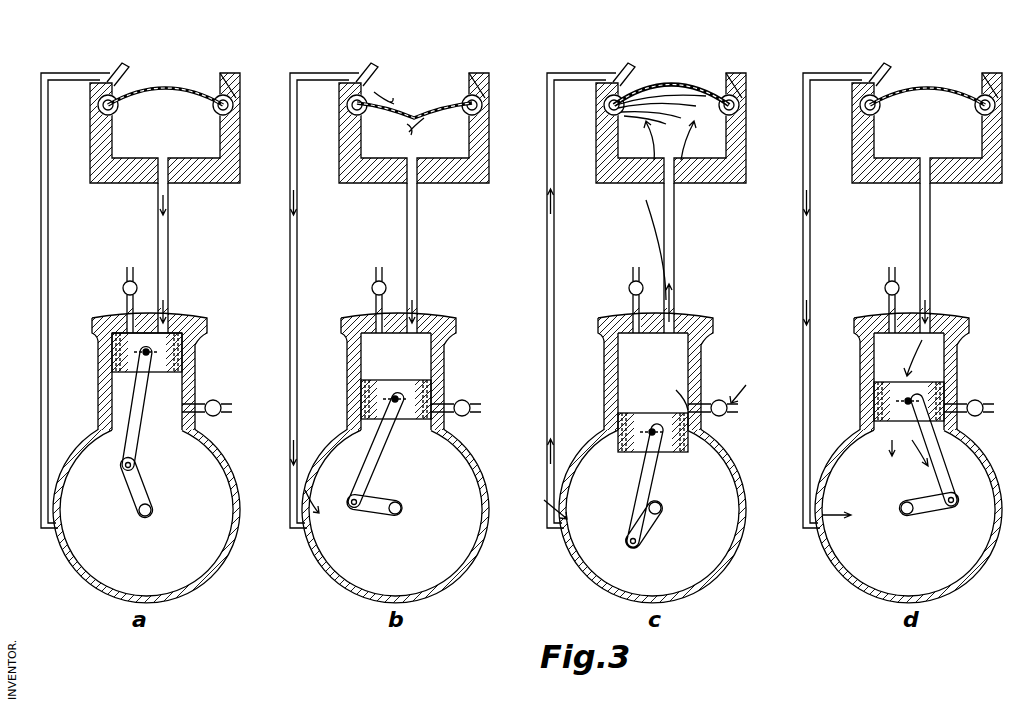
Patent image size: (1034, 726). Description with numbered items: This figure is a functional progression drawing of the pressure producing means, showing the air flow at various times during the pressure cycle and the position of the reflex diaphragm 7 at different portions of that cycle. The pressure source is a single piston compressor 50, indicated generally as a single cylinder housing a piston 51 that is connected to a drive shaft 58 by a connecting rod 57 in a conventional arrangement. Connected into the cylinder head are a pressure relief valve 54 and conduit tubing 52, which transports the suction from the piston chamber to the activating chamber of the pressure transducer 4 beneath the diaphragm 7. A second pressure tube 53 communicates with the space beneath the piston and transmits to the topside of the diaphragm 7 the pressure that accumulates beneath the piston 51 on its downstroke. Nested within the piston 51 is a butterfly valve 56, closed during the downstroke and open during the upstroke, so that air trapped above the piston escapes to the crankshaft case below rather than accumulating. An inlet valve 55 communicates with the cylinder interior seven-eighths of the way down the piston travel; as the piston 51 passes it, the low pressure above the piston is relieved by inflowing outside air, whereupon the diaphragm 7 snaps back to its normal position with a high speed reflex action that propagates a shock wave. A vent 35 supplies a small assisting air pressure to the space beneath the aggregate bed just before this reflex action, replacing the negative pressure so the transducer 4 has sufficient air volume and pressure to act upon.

The vent 35 is at (110, 78).
The reflex diaphragm 7 is at (170, 88).
The pressure transducer 4 is at (233, 155).
The second pressure tube 53 is at (50, 240).
The pressure relief valve 54 is at (121, 283).
The butterfly valve 56 is at (105, 312).
The conduit tubing 52 is at (170, 283).
The piston 51 is at (184, 360).
The inlet valve 55 is at (222, 406).
The connecting rod 57 is at (136, 448).
The compressor 50 is at (233, 466).
The drive shaft 58 is at (141, 491).